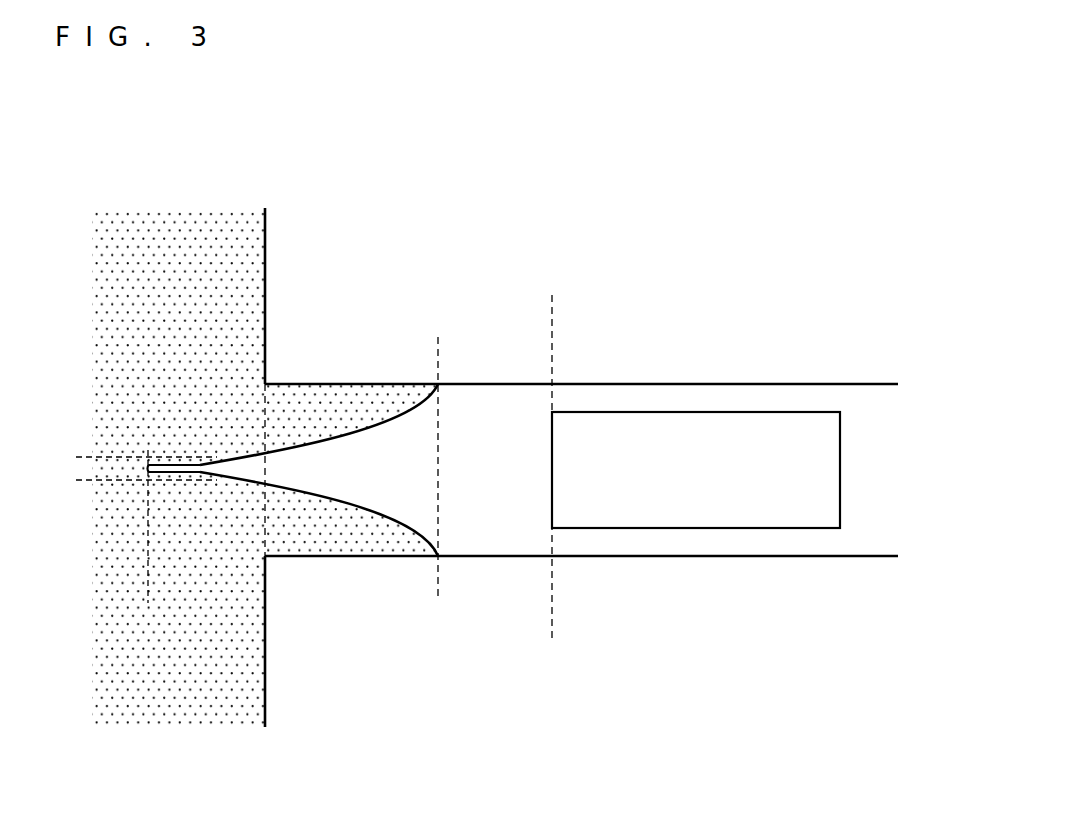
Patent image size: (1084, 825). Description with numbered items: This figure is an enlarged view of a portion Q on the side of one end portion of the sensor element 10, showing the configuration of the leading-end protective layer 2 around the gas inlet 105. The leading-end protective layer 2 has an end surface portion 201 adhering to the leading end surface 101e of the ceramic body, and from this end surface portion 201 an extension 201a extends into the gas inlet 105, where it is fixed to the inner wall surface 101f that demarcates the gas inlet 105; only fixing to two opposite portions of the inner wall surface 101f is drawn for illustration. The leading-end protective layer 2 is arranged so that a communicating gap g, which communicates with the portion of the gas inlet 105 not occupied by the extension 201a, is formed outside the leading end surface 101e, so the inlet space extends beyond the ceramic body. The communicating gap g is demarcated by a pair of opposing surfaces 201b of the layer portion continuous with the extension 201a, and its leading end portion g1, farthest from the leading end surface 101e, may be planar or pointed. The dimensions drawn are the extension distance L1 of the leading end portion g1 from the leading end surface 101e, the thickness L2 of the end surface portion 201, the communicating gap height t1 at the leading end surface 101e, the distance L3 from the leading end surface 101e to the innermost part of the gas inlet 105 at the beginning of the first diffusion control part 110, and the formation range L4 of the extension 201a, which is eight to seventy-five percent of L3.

The leading-end protective layer 2 is at (265, 437).
The end surface portion 201 is at (130, 266).
The leading end surface 101e is at (262, 262).
The inner wall surface 101f is at (493, 388).
The extension 201a is at (343, 515).
The surface 201b is at (184, 462).
The communicating gap g is at (219, 468).
The leading end portion g1 is at (149, 460).
The first diffusion control part 110 is at (822, 402).
The gas inlet 105 is at (522, 528).
The portion Q is at (764, 147).
The sensor element 10 is at (746, 184).
The extension distance of the communicating gap L1 is at (263, 592).
The thickness of the leading-end protective layer in the end surface portion L2 is at (263, 382).
The distance of the innermost part of the gas inlet L3 is at (550, 305).
The formation range of the extension L4 is at (436, 593).
The communicating gap height t1 is at (79, 422).